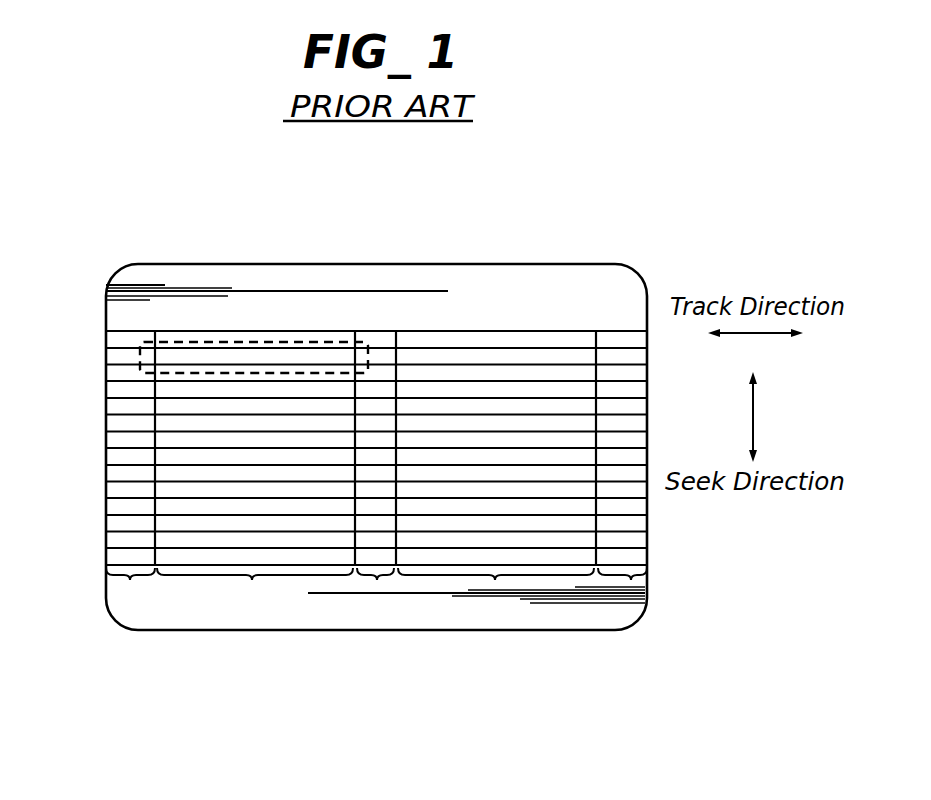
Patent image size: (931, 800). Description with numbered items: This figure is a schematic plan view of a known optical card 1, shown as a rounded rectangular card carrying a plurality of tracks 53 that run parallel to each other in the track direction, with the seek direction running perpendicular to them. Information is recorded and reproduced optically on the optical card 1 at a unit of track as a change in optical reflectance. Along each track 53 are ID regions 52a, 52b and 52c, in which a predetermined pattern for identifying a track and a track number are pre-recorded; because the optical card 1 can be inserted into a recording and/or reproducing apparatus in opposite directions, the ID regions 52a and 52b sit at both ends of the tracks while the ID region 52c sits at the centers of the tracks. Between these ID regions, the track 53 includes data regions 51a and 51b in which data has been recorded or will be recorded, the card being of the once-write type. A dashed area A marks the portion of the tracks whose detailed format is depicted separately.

The optical card 1 is at (106, 291).
The tracks 53 is at (120, 358).
The area A is at (262, 342).
The ID region 52a is at (129, 581).
The data region 51a is at (251, 581).
The ID region 52c is at (377, 581).
The data region 51b is at (495, 581).
The ID region 52b is at (631, 581).